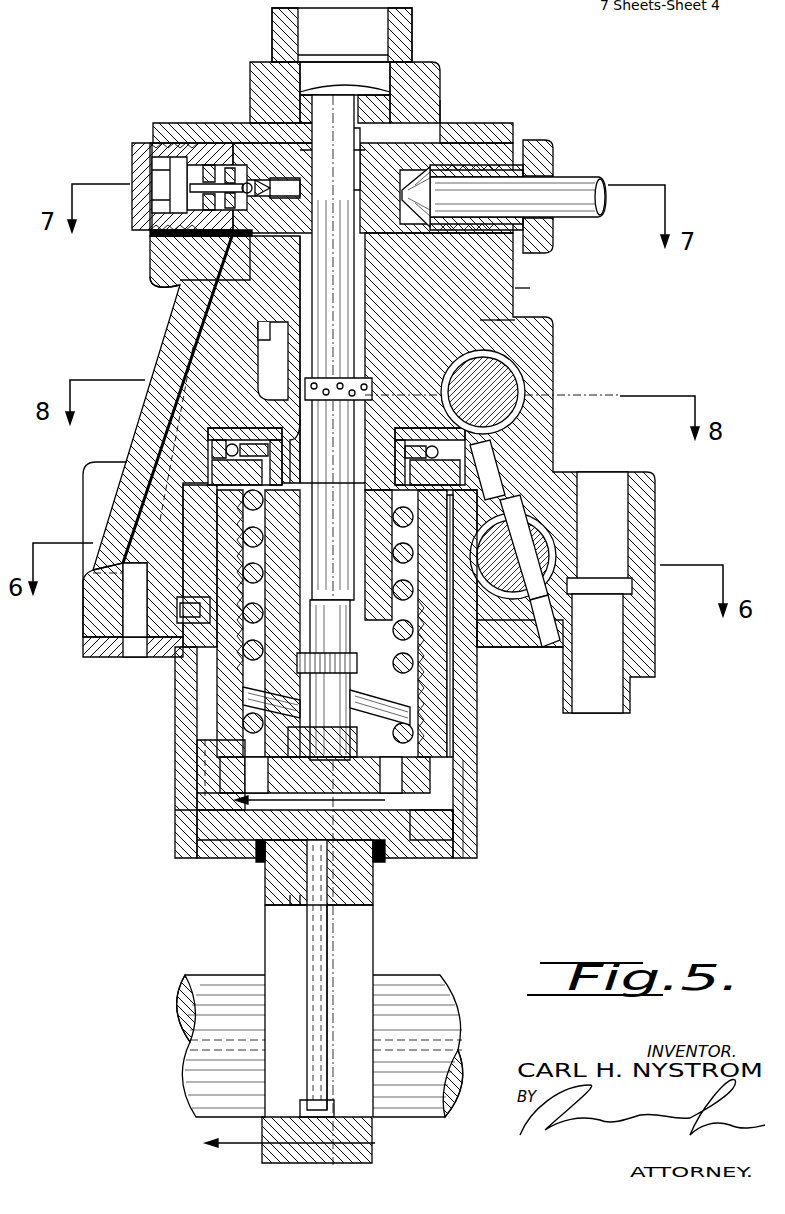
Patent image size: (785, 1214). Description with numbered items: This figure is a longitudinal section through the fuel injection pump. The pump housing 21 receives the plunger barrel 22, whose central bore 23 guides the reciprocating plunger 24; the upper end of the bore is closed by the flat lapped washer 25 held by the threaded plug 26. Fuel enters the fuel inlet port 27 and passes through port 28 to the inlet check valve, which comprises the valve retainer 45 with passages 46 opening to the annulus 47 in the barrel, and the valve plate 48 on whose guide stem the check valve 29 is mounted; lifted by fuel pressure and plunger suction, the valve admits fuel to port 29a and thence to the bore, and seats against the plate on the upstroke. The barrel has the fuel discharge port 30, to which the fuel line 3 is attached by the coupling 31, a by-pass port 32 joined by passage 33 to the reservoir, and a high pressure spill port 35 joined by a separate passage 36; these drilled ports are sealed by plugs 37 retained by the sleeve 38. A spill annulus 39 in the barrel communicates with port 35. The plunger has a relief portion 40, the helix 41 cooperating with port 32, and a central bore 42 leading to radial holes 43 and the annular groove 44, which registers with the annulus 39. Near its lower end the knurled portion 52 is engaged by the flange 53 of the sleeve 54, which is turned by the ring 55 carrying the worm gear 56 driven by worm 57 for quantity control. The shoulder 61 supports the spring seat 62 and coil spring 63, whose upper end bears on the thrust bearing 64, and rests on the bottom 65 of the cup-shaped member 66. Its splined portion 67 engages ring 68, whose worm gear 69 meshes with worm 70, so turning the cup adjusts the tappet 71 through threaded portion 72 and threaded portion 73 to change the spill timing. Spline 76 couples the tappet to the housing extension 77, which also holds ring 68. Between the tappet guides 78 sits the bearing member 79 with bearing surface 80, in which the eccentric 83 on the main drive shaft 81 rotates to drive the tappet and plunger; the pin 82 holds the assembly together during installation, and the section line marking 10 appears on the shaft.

The fuel line 3 is at (580, 193).
The shaft / direction arrow 10 is at (307, 979).
The pump housing 21 is at (480, 297).
The plunger barrel 22 is at (255, 315).
The central bore 23 is at (265, 295).
The plunger 24 is at (245, 627).
The flat lapped washer 25 is at (440, 73).
The threaded plug 26 is at (420, 27).
The fuel inlet port 27 is at (127, 655).
The port 28 is at (195, 237).
The check valve 29 is at (292, 170).
The port 29a is at (305, 150).
The fuel discharge port 30 is at (463, 127).
The coupling 31 is at (560, 143).
The by-pass port 32 is at (547, 230).
The passage 33 is at (557, 167).
The high pressure spill port 35 is at (480, 325).
The passage 36 is at (523, 290).
The plugs 37 is at (497, 323).
The sleeve 38 is at (165, 272).
The spill annulus 39 is at (305, 396).
The relief portion 40 is at (310, 167).
The helix 41 is at (235, 262).
The central bore 42 is at (448, 115).
The radial holes 43 is at (462, 396).
The annular groove 44 is at (222, 467).
The valve retainer 45 is at (205, 168).
The passages 46 is at (162, 185).
The annulus 47 is at (243, 187).
The valve plate 48 is at (260, 167).
The knurled portion 52 is at (240, 687).
The flange 53 is at (262, 640).
The sleeve 54 is at (200, 560).
The ring 55 is at (230, 432).
The worm gear 56 is at (235, 367).
The worm 57 is at (490, 383).
The shoulder 61 is at (230, 755).
The spring seat 62 is at (455, 778).
The coil spring 63 is at (238, 735).
The thrust bearing 64 is at (155, 480).
The bottom 65 is at (427, 837).
The cup-shaped member 66 is at (488, 650).
The splined portion 67 is at (468, 530).
The ring 68 is at (510, 500).
The worm gear 69 is at (510, 643).
The worm 70 is at (517, 553).
The tappet 71 is at (175, 837).
The threaded portion 72 is at (430, 747).
The threaded portion 73 is at (452, 707).
The spline 76 is at (190, 803).
The extension 77 is at (473, 835).
The guides 78 is at (258, 850).
The bearing member 79 is at (350, 890).
The bearing surface 80 is at (293, 898).
The main drive shaft 81 is at (225, 985).
The pin 82 is at (130, 650).
The eccentric 83 is at (358, 947).